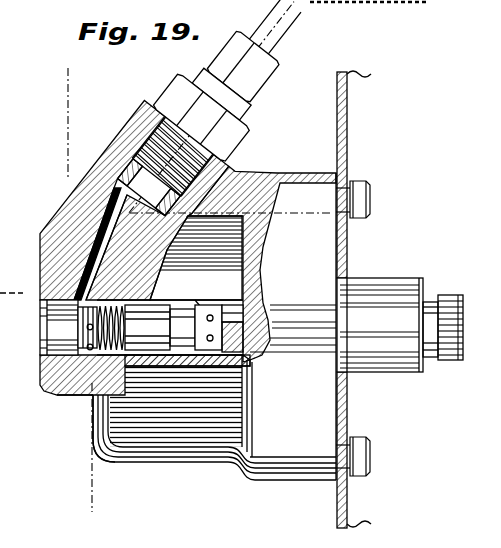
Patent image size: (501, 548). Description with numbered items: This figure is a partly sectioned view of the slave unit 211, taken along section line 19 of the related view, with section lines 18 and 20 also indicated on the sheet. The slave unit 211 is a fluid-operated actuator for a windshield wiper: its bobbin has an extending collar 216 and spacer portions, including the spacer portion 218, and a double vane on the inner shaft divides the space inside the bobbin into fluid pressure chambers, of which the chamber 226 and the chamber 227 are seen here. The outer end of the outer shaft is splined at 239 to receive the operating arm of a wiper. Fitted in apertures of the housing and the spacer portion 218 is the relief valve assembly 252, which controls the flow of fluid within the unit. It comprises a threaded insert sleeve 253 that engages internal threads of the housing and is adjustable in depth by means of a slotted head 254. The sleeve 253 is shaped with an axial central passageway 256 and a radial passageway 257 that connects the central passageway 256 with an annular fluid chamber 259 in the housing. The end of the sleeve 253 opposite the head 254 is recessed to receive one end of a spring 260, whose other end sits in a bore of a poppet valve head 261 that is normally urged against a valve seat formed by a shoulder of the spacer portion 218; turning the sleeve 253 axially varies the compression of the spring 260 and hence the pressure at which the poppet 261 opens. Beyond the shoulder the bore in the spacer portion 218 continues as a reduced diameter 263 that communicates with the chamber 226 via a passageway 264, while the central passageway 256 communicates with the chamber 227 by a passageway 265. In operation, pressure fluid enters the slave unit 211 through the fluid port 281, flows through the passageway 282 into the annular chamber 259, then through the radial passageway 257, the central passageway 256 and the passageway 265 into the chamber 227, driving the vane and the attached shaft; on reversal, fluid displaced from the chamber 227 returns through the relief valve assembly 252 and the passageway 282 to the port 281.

The section line 18- 18 is at (90, 100).
The section line 19- 19 is at (0, 490).
The section line 20- 20 is at (11, 303).
The slave unit 211 is at (249, 170).
The extending collar 216 is at (376, 288).
The spacer portion 218 is at (222, 305).
The fluid pressure chamber 226 is at (210, 364).
The fluid pressure chamber 227 is at (228, 252).
The splines 239 is at (448, 293).
The relief valve assembly 252 is at (0, 389).
The threaded insert sleeve 253 is at (92, 397).
The slotted head 254 is at (53, 303).
The axial central passageway 256 is at (0, 323).
The radial passageway 257 is at (0, 344).
The annular fluid chamber 259 is at (0, 366).
The spring 260 is at (198, 316).
The poppet valve head 261 is at (212, 318).
The reduced diameter 263 is at (250, 323).
The passageway 264 is at (252, 348).
The passageway 265 is at (206, 299).
The fluid port 281 is at (118, 180).
The passageway 282 is at (107, 233).